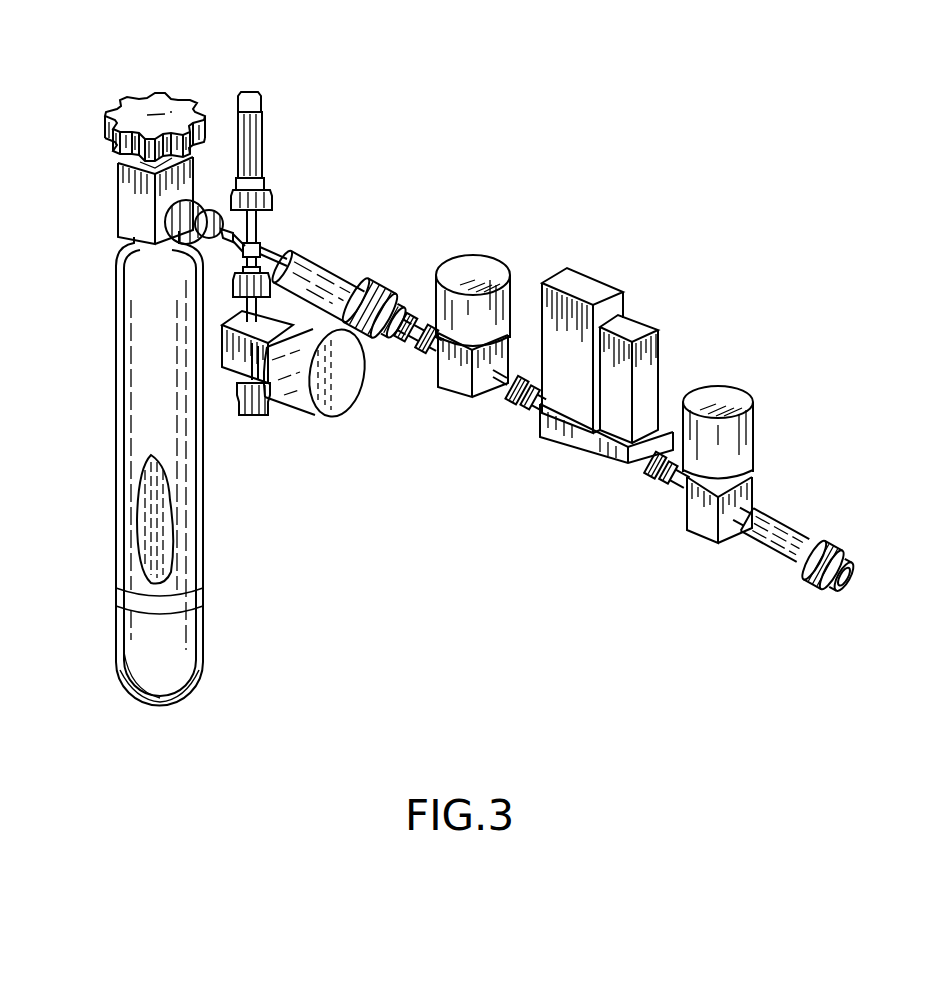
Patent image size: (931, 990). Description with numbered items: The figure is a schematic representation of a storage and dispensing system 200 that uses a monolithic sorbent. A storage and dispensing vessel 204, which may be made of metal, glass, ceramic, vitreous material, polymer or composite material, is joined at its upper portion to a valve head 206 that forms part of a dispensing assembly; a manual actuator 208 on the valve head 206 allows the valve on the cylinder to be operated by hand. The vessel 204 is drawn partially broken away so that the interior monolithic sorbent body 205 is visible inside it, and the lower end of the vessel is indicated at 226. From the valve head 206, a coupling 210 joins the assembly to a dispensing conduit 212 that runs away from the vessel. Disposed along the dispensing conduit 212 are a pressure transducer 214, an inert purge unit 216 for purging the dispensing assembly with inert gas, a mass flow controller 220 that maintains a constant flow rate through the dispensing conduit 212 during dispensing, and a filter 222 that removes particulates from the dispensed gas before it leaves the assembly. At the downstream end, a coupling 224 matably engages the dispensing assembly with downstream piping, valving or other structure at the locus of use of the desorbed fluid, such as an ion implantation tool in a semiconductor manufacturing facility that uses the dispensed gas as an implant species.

The storage and dispensing system 200 is at (421, 118).
The storage and dispensing vessel 204 is at (138, 396).
The monolithic sorbent body 205 is at (165, 520).
The valve head 206 is at (120, 188).
The manual actuator 208 is at (170, 104).
The coupling 210 is at (122, 248).
The dispensing conduit 212 is at (272, 263).
The pressure transducer 214 is at (262, 146).
The inert purge unit 216 is at (340, 385).
The mass flow controller 220 is at (625, 262).
The filter 222 is at (757, 436).
The coupling 224 is at (805, 592).
The vessel bottom 226 is at (150, 678).